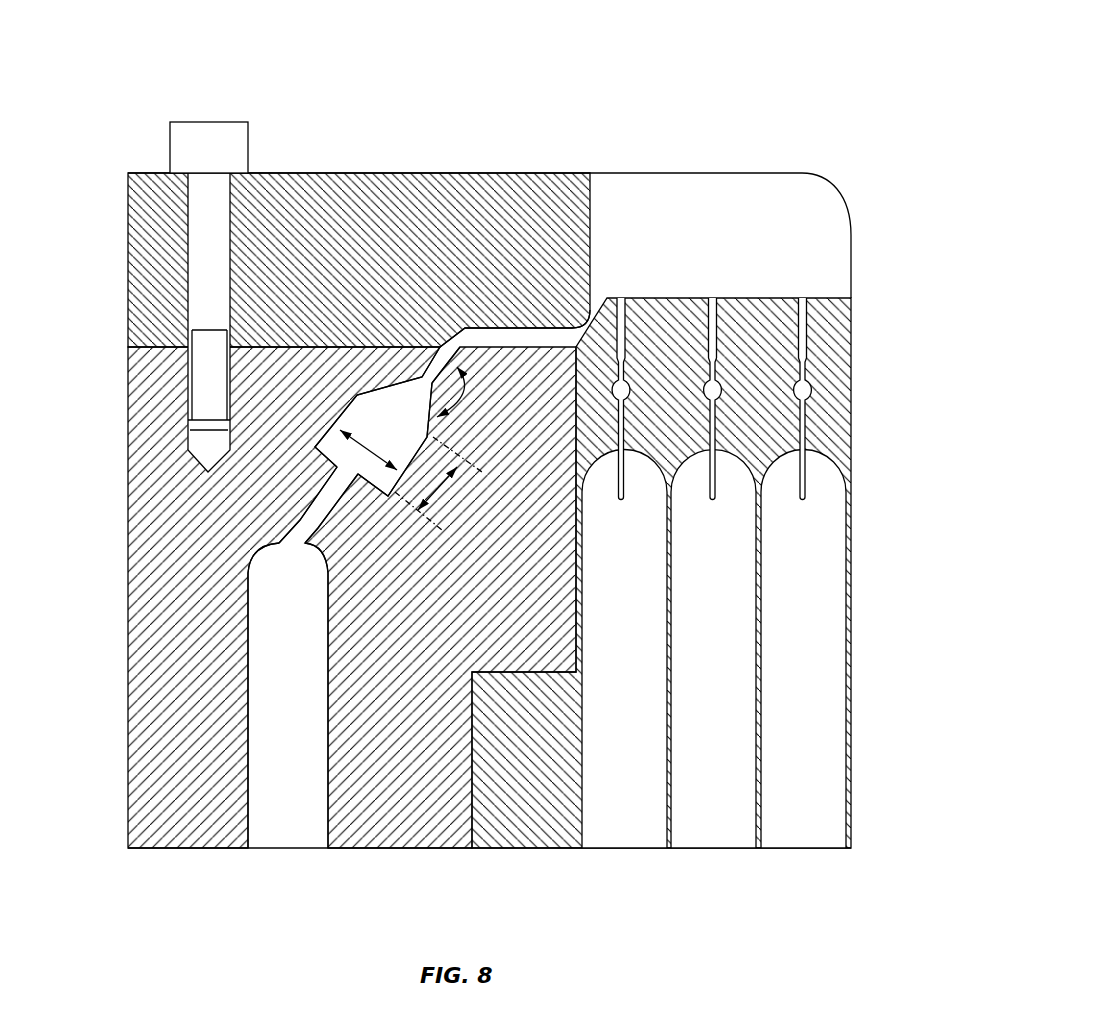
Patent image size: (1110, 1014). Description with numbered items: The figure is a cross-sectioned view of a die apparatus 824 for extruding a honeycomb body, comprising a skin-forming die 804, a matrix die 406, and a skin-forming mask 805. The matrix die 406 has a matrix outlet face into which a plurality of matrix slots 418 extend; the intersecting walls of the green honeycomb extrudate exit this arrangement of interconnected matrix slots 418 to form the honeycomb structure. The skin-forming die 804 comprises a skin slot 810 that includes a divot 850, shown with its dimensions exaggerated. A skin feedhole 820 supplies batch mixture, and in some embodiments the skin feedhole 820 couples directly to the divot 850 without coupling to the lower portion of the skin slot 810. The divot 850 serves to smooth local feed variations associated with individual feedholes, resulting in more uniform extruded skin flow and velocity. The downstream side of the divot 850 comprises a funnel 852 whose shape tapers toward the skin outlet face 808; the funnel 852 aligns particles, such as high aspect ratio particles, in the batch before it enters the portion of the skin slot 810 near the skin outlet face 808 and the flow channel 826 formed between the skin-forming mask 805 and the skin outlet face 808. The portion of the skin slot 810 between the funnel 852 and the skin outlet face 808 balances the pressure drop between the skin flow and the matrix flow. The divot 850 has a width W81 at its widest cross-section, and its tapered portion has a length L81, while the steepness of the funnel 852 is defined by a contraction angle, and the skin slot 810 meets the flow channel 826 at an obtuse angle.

The die apparatus 824 is at (650, 83).
The skin-forming mask 805 is at (447, 170).
The skin-forming die 804 is at (127, 584).
The matrix die 406 is at (650, 296).
The matrix slots 418 is at (714, 297).
The skin outlet face 808 is at (153, 334).
The flow channel 826 is at (452, 331).
The skin slot 810 is at (422, 355).
The divot 850 is at (336, 405).
The funnel 852 is at (429, 438).
The skin feedhole 820 is at (327, 822).
The width W81 is at (362, 449).
The length L81 is at (441, 496).